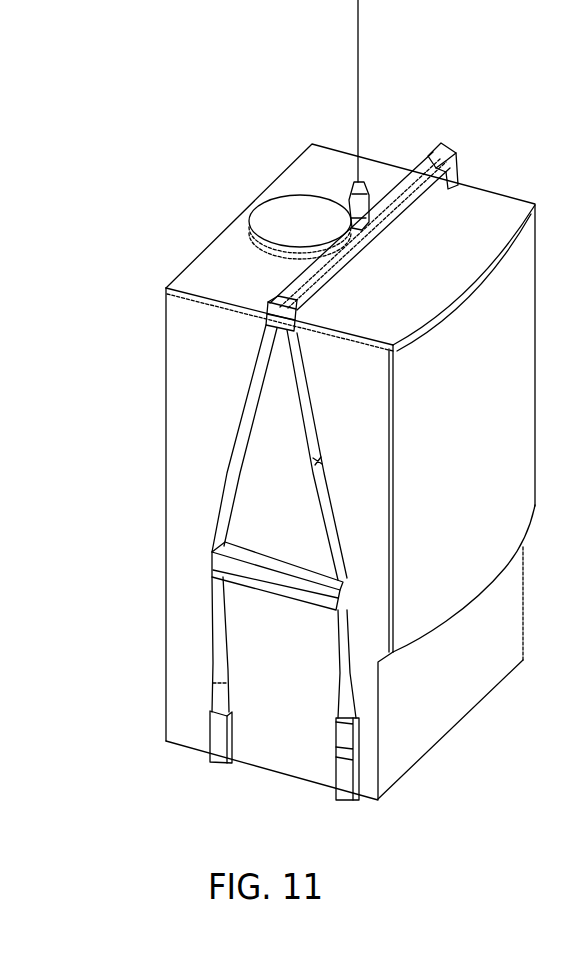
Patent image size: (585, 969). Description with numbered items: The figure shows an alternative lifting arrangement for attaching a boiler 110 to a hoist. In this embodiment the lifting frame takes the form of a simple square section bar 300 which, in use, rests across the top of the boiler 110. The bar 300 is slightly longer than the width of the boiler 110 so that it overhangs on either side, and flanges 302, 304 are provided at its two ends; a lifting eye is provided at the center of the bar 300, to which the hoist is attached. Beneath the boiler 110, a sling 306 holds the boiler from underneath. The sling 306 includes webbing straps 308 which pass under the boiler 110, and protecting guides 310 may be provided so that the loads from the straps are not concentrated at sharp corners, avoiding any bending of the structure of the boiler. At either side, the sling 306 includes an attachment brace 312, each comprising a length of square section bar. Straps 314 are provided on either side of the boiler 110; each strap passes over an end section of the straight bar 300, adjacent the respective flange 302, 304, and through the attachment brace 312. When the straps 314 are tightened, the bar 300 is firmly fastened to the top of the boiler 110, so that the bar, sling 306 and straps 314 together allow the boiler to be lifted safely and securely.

The boiler 110 is at (478, 421).
The square section bar 300 is at (285, 294).
The flange 302 is at (448, 140).
The flange 304 is at (264, 323).
The sling 306 is at (352, 698).
The webbing straps 308 is at (219, 671).
The protecting guides 310 is at (213, 761).
The attachment brace 312 is at (240, 573).
The straps 314 is at (236, 452).